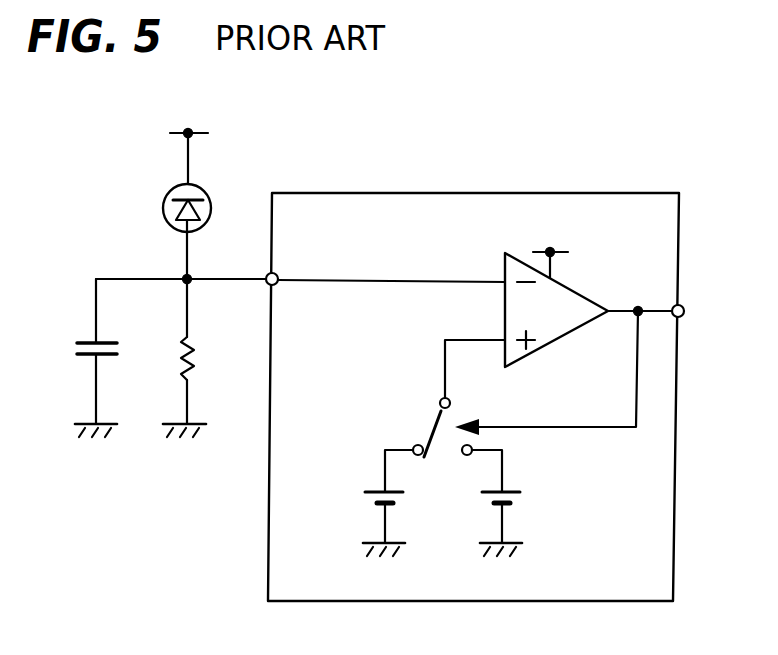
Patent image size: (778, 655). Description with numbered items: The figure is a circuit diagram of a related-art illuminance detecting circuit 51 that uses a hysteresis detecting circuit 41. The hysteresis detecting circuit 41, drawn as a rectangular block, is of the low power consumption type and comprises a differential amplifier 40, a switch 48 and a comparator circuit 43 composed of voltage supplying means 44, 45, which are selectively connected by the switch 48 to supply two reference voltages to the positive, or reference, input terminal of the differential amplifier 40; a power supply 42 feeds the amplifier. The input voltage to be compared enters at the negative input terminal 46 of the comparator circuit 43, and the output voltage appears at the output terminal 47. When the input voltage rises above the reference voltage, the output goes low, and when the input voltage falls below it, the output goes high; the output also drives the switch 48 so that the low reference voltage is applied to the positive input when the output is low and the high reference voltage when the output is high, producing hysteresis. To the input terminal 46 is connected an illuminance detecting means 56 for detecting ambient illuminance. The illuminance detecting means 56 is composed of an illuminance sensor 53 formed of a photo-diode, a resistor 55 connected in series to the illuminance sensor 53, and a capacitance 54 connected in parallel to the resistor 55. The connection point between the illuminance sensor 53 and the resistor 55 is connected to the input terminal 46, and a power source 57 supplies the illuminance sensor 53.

The differential amplifier 40 is at (562, 330).
The hysteresis detecting circuit 41 is at (421, 192).
The power supply 42 is at (558, 250).
The comparator circuit 43 is at (583, 278).
The voltage supplying means 44 is at (407, 498).
The voltage supplying means 45 is at (519, 498).
The input terminal 46 is at (279, 274).
The output terminal 47 is at (685, 308).
The switch 48 is at (427, 420).
The illuminance detecting circuit 51 is at (343, 143).
The illuminance sensor 53 is at (163, 205).
The capacitance (C1) 54 is at (76, 352).
The resistor (R1) 55 is at (195, 357).
The illuminance detecting means 56 is at (96, 240).
The power source 57 is at (206, 128).